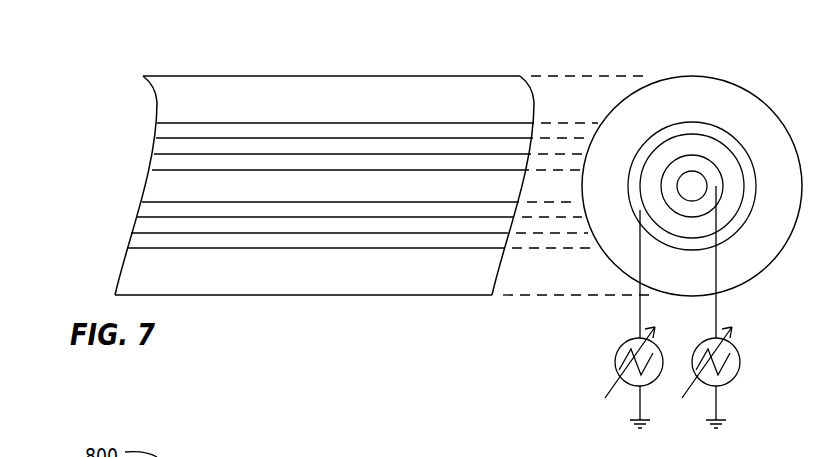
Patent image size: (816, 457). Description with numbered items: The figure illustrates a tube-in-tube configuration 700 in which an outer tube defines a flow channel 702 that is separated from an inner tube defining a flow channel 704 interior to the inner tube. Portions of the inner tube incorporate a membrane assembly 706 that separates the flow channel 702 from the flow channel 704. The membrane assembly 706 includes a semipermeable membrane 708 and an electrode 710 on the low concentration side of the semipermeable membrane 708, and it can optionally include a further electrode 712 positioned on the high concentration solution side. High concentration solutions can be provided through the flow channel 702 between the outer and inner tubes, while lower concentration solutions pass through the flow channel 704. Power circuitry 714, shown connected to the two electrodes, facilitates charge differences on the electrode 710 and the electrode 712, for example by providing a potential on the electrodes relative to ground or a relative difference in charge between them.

The tube-in-tube configuration 700 is at (211, 52).
The flow channel 702 is at (157, 102).
The flow channel 704 is at (143, 188).
The membrane assembly 706 is at (138, 122).
The semipermeable membrane 708 is at (133, 222).
The electrode 710 is at (140, 209).
The electrode 712 is at (123, 242).
The circuitry 714 is at (592, 303).